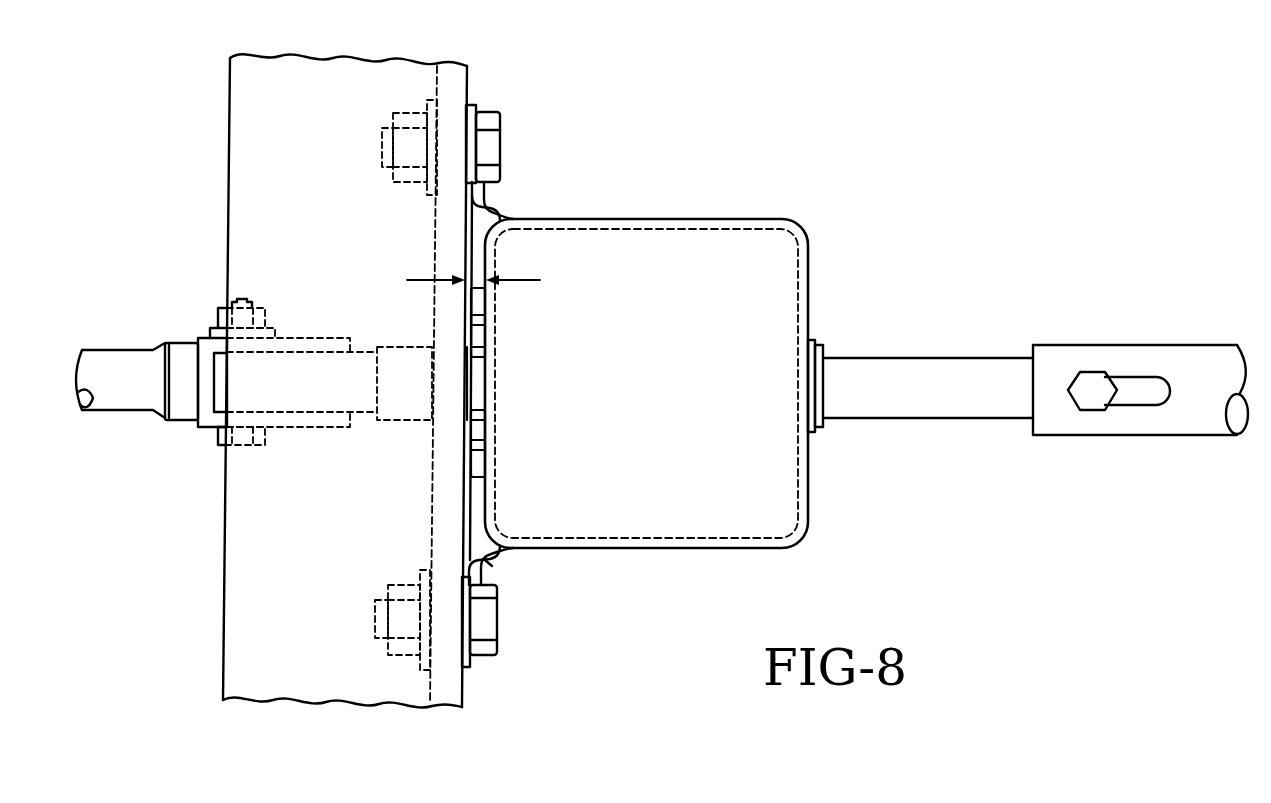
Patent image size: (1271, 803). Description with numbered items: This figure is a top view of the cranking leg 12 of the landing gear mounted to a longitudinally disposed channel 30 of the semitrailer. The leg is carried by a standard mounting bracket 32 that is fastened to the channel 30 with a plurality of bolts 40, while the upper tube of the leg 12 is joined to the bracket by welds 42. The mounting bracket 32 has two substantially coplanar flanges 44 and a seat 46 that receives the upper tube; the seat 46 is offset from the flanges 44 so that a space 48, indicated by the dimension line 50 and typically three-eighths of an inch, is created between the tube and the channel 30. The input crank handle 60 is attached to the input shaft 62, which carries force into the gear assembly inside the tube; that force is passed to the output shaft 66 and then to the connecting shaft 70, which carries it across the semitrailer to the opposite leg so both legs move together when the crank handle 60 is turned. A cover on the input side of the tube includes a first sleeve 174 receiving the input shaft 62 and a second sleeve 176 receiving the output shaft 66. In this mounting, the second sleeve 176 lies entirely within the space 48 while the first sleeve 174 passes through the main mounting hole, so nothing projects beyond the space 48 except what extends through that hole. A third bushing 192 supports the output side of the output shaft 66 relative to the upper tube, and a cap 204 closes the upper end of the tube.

The cranking leg 12 is at (693, 218).
The channel 30 is at (413, 67).
The mounting bracket 32 is at (494, 569).
The bolt 40 is at (491, 146).
The weld 42 is at (508, 240).
The flange 44 is at (476, 104).
The seat 46 is at (480, 487).
The space 48 is at (466, 276).
The dimension line 50 is at (527, 284).
The input crank handle 60 is at (118, 363).
The input shaft 62 is at (315, 392).
The output shaft 66 is at (900, 370).
The connecting shaft 70 is at (1140, 355).
The first sleeve 174 is at (403, 355).
The second sleeve 176 is at (477, 383).
The third bushing 192 is at (824, 425).
The cap 204 is at (770, 289).